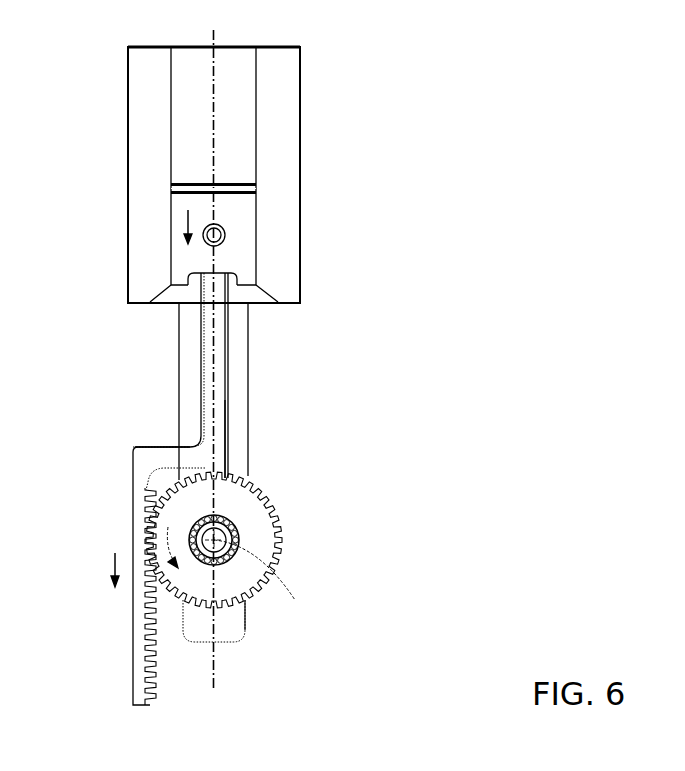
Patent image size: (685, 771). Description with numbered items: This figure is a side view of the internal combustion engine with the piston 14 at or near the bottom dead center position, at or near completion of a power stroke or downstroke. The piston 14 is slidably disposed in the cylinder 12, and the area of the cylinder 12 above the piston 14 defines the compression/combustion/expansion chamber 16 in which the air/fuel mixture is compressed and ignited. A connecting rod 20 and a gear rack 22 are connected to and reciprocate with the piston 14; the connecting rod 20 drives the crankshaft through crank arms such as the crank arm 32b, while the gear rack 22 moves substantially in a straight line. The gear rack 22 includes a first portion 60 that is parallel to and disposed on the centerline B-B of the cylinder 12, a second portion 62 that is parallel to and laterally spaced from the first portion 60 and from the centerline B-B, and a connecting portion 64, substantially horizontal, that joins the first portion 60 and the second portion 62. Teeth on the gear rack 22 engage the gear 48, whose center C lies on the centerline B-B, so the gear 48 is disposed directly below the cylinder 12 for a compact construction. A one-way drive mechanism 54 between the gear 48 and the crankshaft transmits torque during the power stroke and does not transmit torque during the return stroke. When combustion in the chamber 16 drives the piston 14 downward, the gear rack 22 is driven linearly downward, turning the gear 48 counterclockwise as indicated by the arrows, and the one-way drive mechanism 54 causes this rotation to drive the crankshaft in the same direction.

The cylinder 12 is at (285, 151).
The piston 14 is at (240, 229).
The compression/combustion/expansion chamber 16 is at (245, 69).
The connecting rod 20 is at (232, 461).
The gear rack 22 is at (140, 457).
The crank arm 32b is at (238, 624).
The gear 48 is at (259, 523).
The one-way drive mechanism 54 is at (232, 517).
The first portion 60 is at (214, 346).
The second portion 62 is at (137, 516).
The connecting portion 64 is at (170, 458).
The centerline B is at (212, 360).
The center C is at (254, 577).